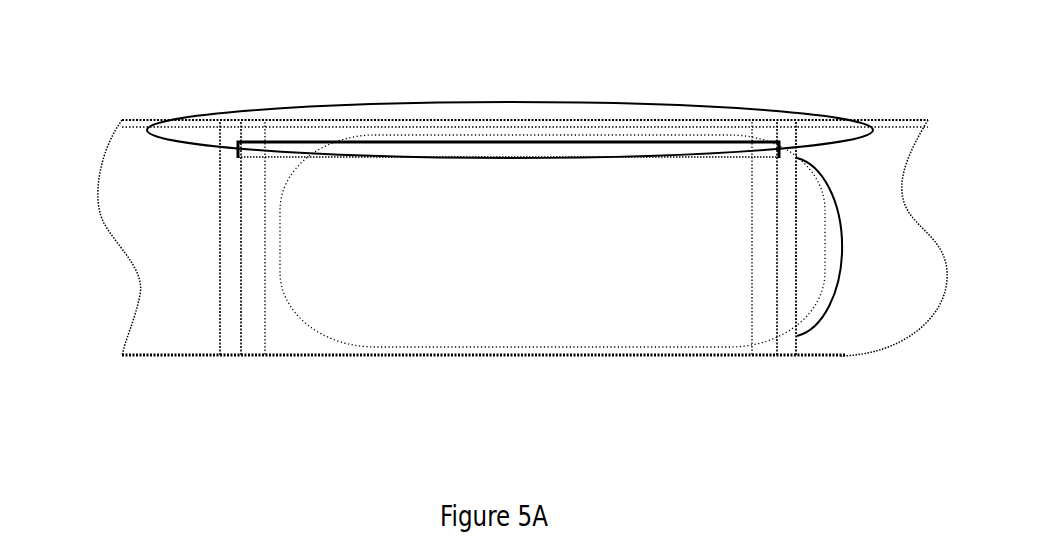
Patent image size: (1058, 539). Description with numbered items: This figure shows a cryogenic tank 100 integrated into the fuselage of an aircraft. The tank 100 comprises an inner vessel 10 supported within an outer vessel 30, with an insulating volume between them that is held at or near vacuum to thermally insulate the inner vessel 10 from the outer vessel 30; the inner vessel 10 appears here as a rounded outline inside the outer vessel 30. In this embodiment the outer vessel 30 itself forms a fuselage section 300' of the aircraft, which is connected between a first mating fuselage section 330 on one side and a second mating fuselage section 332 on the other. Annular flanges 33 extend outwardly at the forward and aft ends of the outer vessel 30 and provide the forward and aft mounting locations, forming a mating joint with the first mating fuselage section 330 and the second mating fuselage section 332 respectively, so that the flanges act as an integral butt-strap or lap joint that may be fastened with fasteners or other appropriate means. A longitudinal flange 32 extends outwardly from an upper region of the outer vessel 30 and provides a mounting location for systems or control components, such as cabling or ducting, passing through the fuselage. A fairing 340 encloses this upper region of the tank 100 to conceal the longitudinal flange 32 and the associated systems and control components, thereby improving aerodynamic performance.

The inner vessel 10 is at (332, 336).
The outer vessel 30 is at (820, 317).
The longitudinal flange 32 is at (510, 145).
The annular flanges 33 is at (230, 306).
The tank 100 is at (464, 390).
The fuselage section 300' is at (741, 423).
The first mating fuselage section 330 is at (153, 279).
The second mating fuselage section 332 is at (887, 146).
The fairing 340 is at (260, 103).